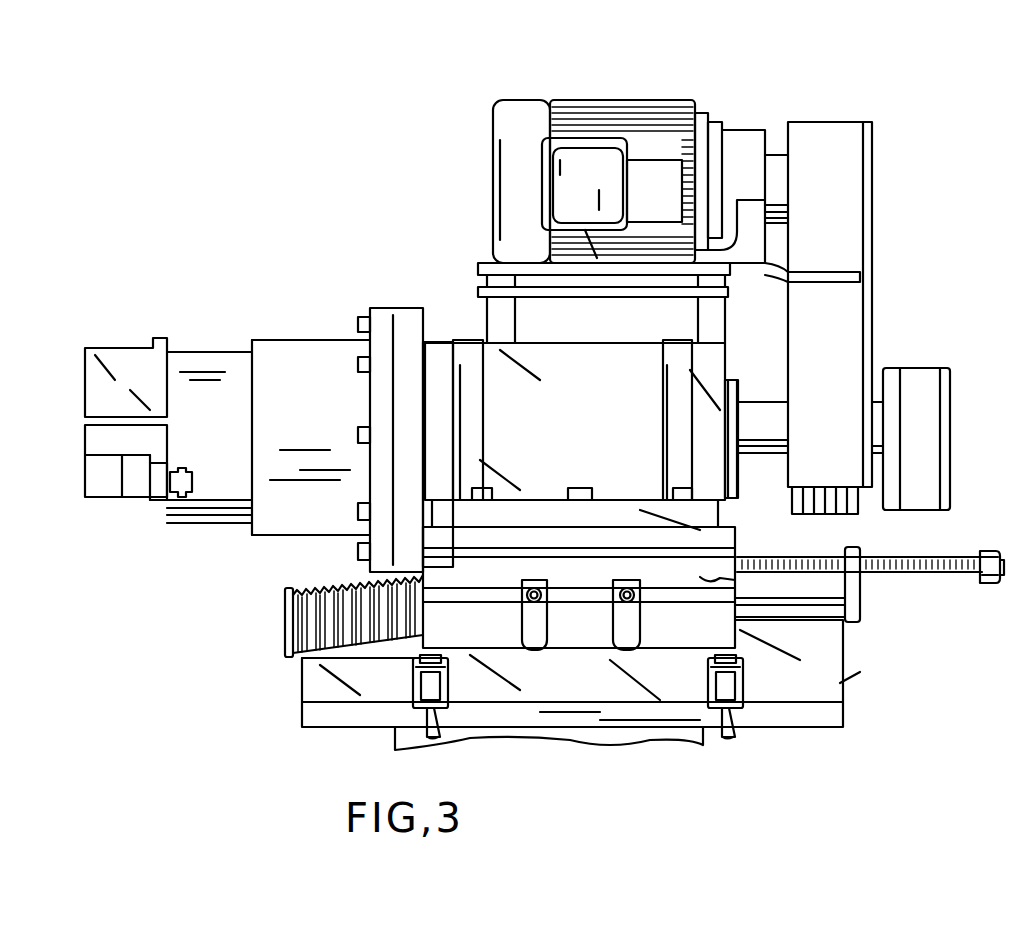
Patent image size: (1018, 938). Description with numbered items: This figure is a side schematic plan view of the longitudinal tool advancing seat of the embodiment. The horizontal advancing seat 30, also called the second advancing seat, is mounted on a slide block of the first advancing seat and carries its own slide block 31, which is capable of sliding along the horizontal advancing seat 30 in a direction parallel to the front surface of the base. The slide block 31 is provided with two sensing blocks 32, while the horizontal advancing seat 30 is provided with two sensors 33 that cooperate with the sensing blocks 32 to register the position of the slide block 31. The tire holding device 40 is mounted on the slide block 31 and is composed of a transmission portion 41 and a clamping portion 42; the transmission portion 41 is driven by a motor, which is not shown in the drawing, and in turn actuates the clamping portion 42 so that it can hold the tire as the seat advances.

The horizontal advancing seat 30 is at (810, 685).
The slide block 31 is at (710, 578).
The sensing blocks 32 is at (655, 610).
The sensors 33 is at (712, 720).
The tire holding device 40 is at (380, 307).
The transmission portion 41 is at (573, 143).
The clamping portion 42 is at (115, 360).